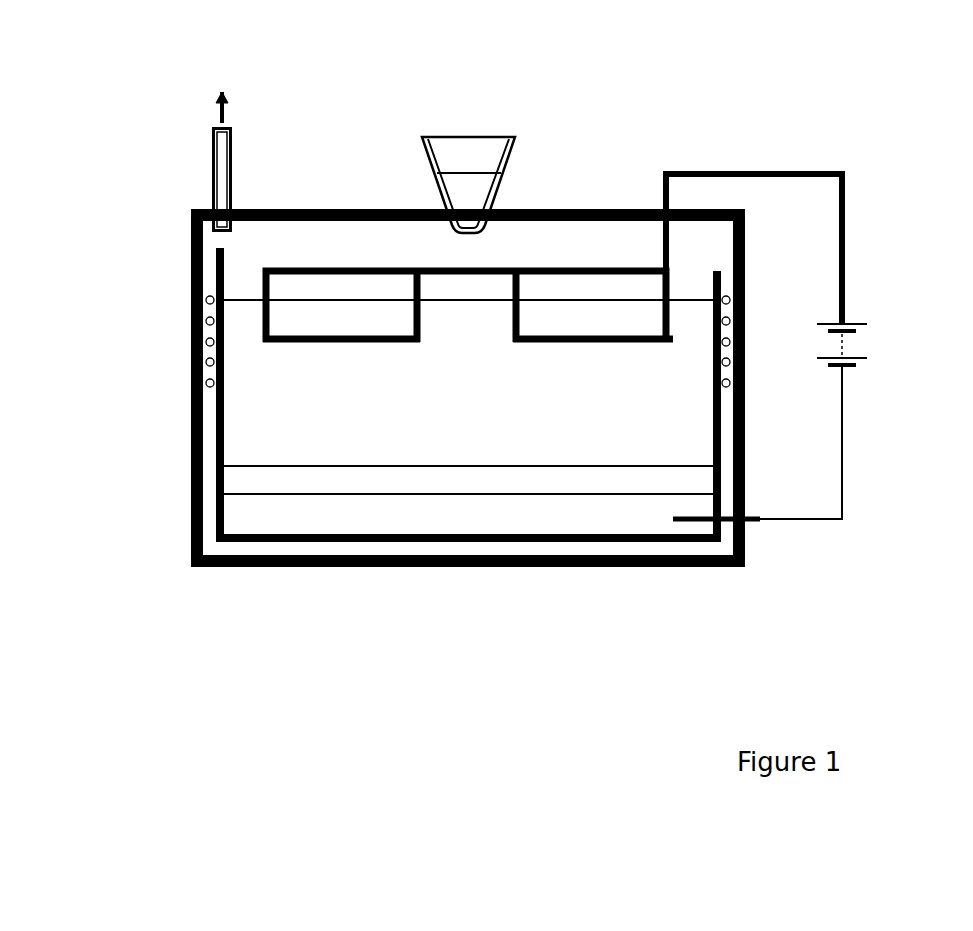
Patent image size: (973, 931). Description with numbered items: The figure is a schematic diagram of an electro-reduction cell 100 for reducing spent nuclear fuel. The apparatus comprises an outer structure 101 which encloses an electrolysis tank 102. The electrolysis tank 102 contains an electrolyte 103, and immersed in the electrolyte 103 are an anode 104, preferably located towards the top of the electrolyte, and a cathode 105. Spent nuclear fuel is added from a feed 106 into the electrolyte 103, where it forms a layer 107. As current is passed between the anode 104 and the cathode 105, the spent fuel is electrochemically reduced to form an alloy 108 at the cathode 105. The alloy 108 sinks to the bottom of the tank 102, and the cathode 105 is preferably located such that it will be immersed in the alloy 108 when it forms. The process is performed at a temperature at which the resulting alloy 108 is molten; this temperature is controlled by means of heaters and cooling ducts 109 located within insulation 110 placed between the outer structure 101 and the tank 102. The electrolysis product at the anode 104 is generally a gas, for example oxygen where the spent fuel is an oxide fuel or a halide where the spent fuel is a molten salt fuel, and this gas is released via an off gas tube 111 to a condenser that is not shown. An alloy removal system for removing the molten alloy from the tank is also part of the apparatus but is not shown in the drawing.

The cell 100 is at (513, 437).
The outer structure 101 is at (511, 566).
The electrolysis tank 102 is at (632, 546).
The electrolyte 103 is at (634, 408).
The anode 104 is at (545, 331).
The cathode 105 is at (690, 524).
The feed 106 is at (468, 133).
The layer 107 is at (669, 483).
The alloy 108 is at (649, 519).
The heaters and cooling ducts 109 is at (207, 341).
The insulation 110 is at (590, 551).
The off gas tube 111 is at (213, 138).